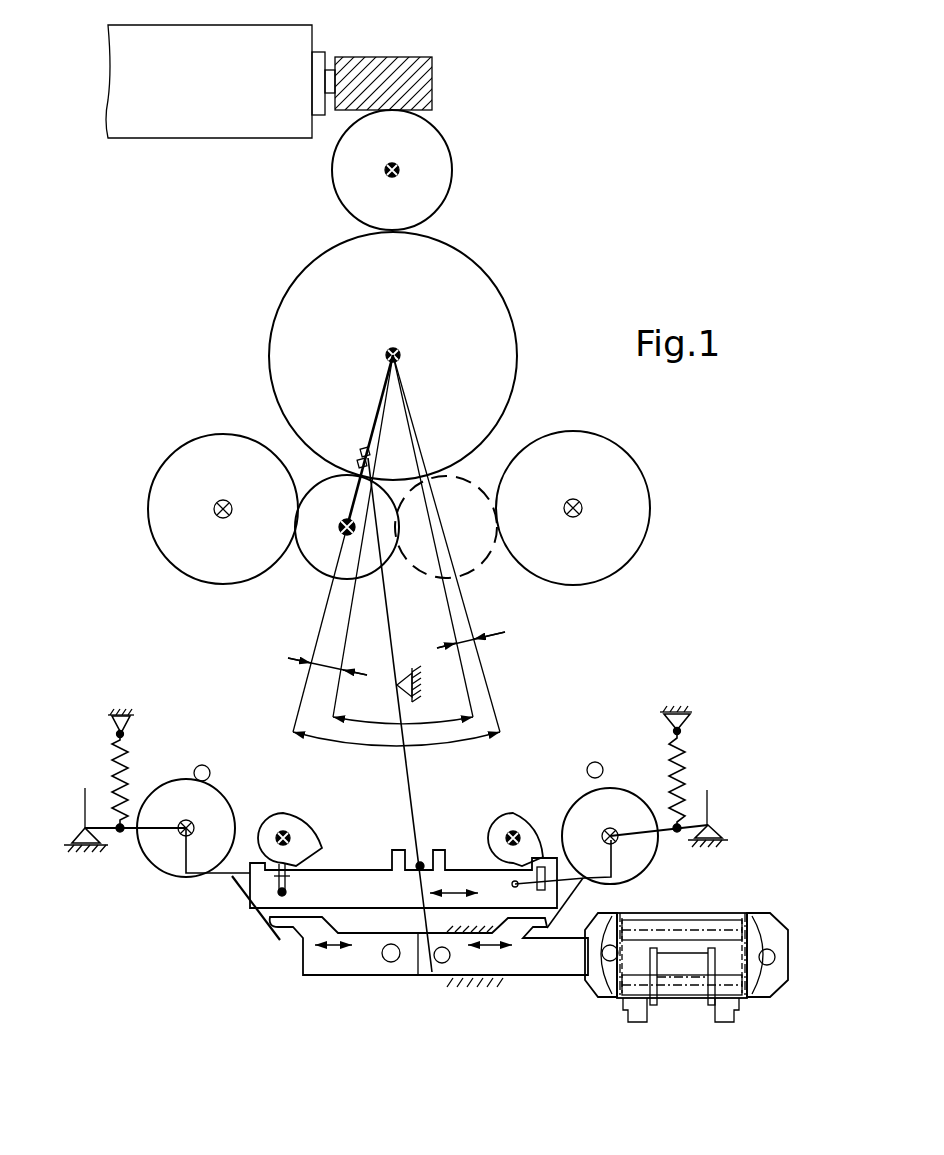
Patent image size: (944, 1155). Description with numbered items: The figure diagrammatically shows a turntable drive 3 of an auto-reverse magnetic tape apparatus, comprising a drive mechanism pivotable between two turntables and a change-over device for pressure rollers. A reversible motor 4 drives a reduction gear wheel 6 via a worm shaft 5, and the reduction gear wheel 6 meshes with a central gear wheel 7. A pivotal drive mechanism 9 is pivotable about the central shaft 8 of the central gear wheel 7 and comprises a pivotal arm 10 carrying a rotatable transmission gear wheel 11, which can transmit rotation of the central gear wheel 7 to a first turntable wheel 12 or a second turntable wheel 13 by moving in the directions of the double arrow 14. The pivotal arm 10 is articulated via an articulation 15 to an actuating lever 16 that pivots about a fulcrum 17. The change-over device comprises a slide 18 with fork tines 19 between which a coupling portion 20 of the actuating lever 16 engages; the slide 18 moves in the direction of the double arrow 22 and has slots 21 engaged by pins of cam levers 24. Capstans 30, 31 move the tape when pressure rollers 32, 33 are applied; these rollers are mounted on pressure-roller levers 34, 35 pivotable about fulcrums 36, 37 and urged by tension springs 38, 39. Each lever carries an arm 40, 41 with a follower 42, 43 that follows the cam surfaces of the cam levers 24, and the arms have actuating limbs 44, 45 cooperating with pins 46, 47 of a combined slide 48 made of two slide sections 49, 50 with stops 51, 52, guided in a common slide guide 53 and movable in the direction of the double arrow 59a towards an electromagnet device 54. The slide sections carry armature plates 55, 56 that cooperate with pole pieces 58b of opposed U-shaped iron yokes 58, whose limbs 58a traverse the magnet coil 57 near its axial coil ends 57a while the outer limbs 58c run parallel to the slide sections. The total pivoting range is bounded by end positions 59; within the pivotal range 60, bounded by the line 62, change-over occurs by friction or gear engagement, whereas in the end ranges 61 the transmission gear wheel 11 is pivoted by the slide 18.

The turntable drive 3 is at (565, 270).
The reversible motor 4 is at (178, 120).
The worm shaft 5 is at (380, 75).
The reduction gear wheel 6 is at (440, 160).
The central gear wheel 7 is at (455, 265).
The central shaft 8 is at (400, 353).
The pivotal drive mechanism 9 is at (420, 412).
The pivotal arm 10 is at (372, 428).
The transmission gear wheel 11 is at (312, 563).
The first turntable wheel 12 is at (183, 560).
The second turntable wheel 13 is at (610, 563).
The double arrow 14 is at (360, 742).
The articulation 15 is at (358, 453).
The actuating lever 16 is at (388, 617).
The fulcrum 17 is at (395, 684).
The slide 18 is at (352, 882).
The fork tines 19 is at (398, 848).
The coupling portion 20 is at (412, 876).
The slots 21 is at (288, 885).
The double arrow 22 is at (444, 889).
The cam levers 24 is at (290, 820).
The capstan 30 is at (203, 765).
The capstan 31 is at (596, 762).
The pressure roller 32 is at (172, 800).
The pressure roller 33 is at (632, 803).
The pressure-roller lever 34 is at (160, 833).
The pressure-roller lever 35 is at (643, 838).
The fulcrum 36 is at (88, 825).
The fulcrum 37 is at (712, 822).
The tension spring 38 is at (115, 760).
The tension spring 39 is at (683, 763).
The arm 40 is at (221, 876).
The arm 41 is at (580, 880).
The follower 42 is at (274, 877).
The follower 43 is at (514, 886).
The actuating limb 44 is at (258, 915).
The actuating limb 45 is at (565, 920).
The pin 46 is at (287, 925).
The pin 47 is at (542, 940).
The combined slide 48 is at (417, 978).
The slide section 49 is at (352, 967).
The slide section 50 is at (497, 967).
The stop 51 is at (389, 963).
The stop 52 is at (442, 963).
The slide guide 53 is at (470, 983).
The electromagnet device 54 is at (682, 1013).
The armature plate 55 is at (767, 995).
The armature plate 56 is at (605, 980).
The magnet coil 57 is at (692, 998).
The axial coil ends 57a is at (667, 980).
The iron yoke 58 is at (720, 922).
The limbs 58a is at (678, 983).
The pole pieces 58b is at (618, 912).
The outer limbs 58c is at (690, 927).
The end positions 59 is at (302, 696).
The double arrow 59a is at (333, 948).
The pivotal range 60 is at (442, 723).
The end ranges 61 is at (327, 660).
The line 62 is at (390, 536).